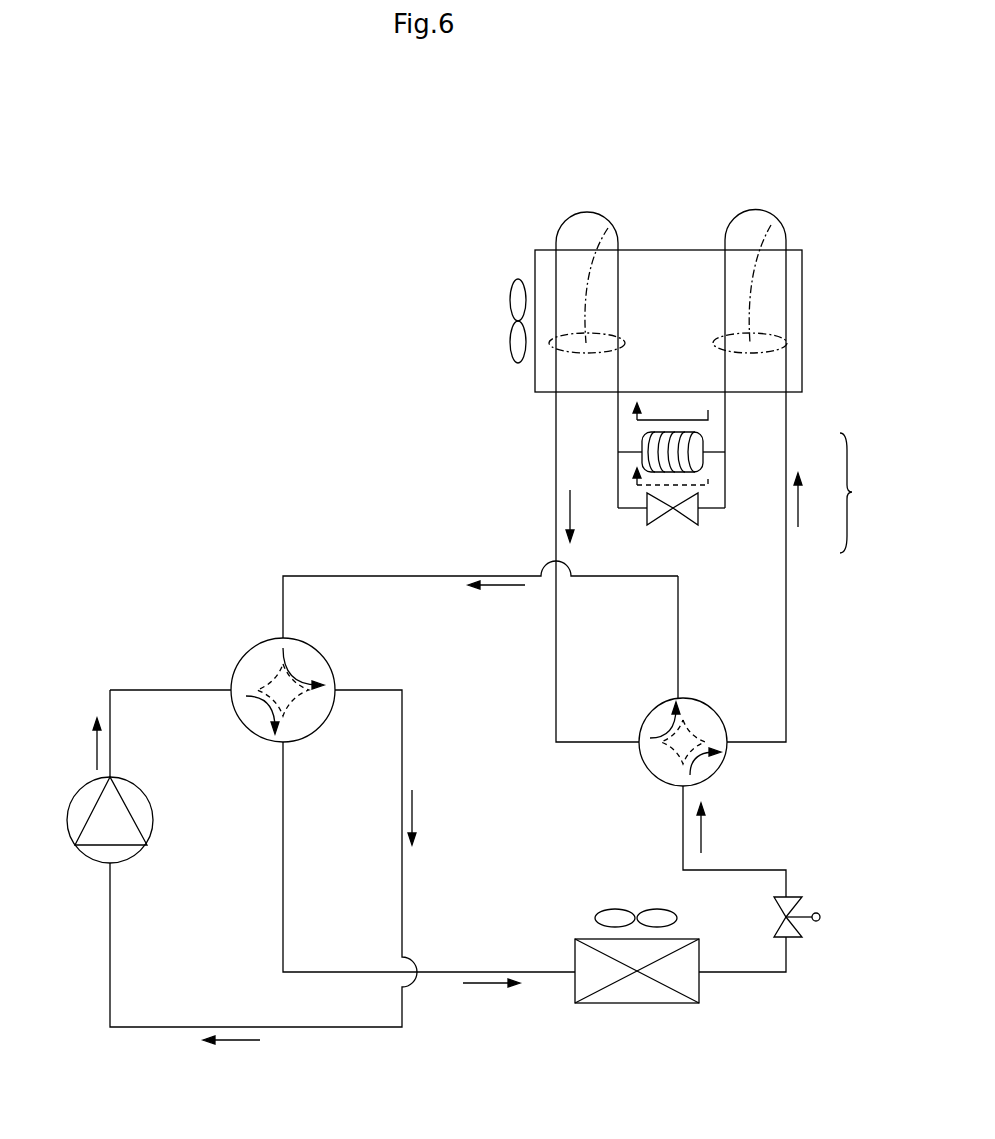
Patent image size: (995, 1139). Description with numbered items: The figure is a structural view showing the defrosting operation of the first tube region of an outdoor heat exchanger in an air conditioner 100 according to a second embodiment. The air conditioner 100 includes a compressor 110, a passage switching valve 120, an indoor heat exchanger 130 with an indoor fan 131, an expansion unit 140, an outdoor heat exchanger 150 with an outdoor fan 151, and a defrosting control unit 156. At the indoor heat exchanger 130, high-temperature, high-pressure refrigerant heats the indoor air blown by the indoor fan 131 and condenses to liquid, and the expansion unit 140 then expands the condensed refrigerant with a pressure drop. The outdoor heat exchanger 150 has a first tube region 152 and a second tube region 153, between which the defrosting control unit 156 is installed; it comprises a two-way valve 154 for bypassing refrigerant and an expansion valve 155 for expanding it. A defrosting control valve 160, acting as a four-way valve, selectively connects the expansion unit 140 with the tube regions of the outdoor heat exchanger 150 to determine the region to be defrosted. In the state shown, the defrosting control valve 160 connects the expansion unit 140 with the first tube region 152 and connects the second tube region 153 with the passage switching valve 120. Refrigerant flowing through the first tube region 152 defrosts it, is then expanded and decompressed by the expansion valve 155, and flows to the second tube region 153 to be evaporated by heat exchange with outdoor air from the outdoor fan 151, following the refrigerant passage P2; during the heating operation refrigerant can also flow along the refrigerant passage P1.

The air conditioner 100 is at (250, 238).
The compressor 110 is at (85, 800).
The passage switching valve 120 is at (250, 657).
The indoor heat exchanger 130 is at (645, 993).
The indoor fan 131 is at (615, 915).
The expansion unit 140 is at (803, 897).
The outdoor heat exchanger 150 is at (803, 340).
The outdoor fan 151 is at (508, 342).
The first tube region 152 is at (768, 222).
The second tube region 153 is at (605, 222).
The two-way valve 154 is at (698, 518).
The expansion valve 155 is at (703, 445).
The defrosting control unit 156 is at (865, 493).
The defrosting control valve 160 is at (718, 770).
The refrigerant passage P1 is at (637, 485).
The refrigerant passage P2 is at (708, 413).